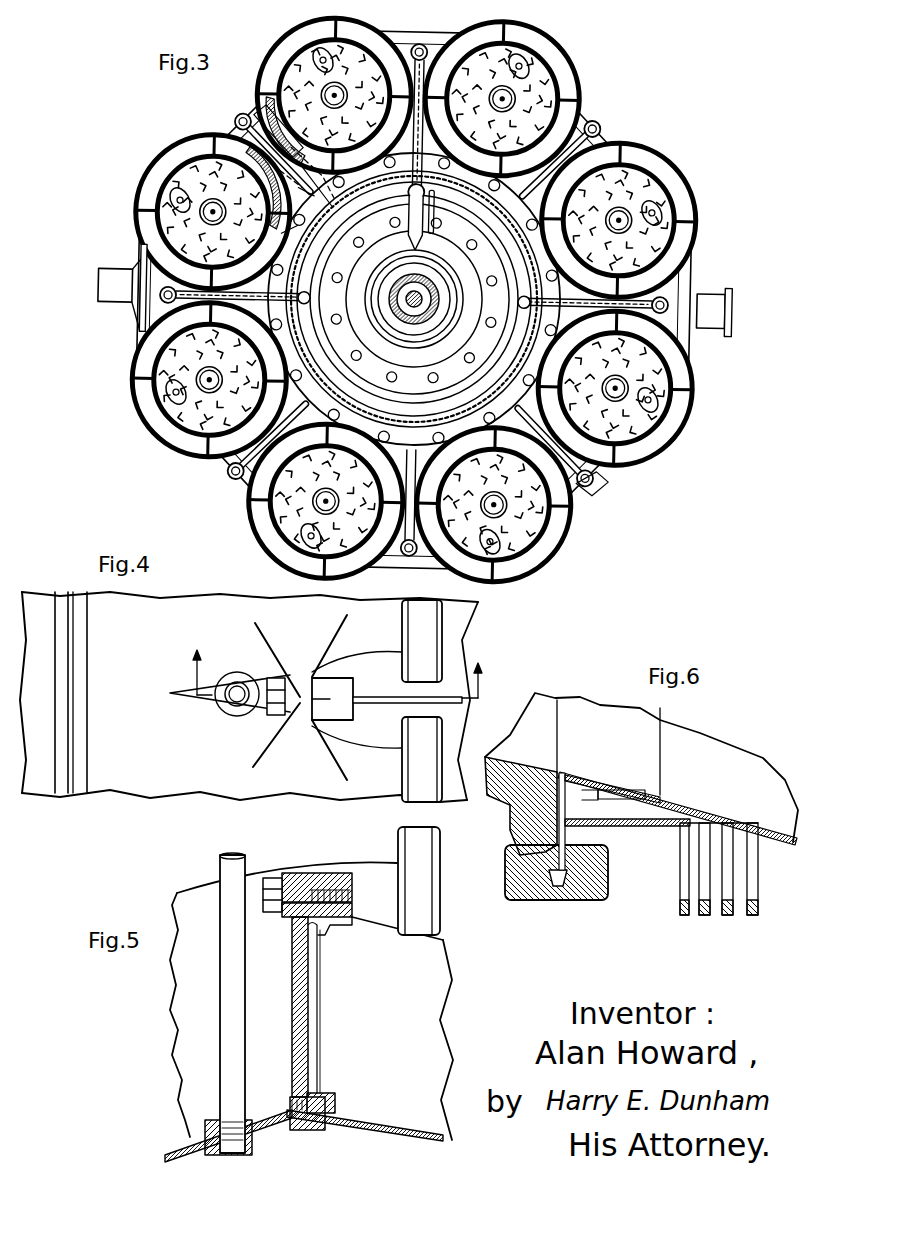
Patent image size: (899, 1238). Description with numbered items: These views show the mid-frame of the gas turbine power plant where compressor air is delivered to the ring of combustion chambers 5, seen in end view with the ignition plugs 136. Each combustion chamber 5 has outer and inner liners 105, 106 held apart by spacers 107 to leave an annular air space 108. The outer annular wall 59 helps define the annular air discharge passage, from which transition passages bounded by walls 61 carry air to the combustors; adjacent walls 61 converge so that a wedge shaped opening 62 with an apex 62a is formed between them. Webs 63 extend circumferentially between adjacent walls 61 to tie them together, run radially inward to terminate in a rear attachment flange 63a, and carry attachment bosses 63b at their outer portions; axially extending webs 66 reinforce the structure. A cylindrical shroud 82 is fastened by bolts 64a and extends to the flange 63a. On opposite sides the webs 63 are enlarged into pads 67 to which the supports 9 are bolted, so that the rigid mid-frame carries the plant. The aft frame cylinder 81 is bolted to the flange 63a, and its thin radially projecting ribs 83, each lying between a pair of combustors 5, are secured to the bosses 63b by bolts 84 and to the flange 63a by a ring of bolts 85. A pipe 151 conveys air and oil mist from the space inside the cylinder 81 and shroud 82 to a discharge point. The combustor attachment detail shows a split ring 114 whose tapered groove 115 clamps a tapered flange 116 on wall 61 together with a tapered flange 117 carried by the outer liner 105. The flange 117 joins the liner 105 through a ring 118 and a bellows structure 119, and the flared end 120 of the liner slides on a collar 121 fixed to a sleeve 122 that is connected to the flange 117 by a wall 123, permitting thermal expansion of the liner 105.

In FIG. 3, the combustion chamber 5 is at (656, 152).
In FIG. 4, the combustion chamber 5 is at (337, 667).
In FIG. 3, the central support 9 is at (110, 277).
In FIG. 4, the outer annular wall 59 is at (108, 780).
In FIG. 3, the transition passage wall 61 is at (284, 125).
In FIG. 4, the transition passage wall 61 is at (224, 780).
In FIG. 6, the transition passage wall 61 is at (500, 766).
In FIG. 4, the wedge shaped opening 62 is at (373, 728).
In FIG. 4, the apex of the wedge shaped opening 62a is at (170, 697).
In FIG. 3, the web 63 is at (258, 113).
In FIG. 4, the web 63 is at (290, 640).
In FIG. 5, the web 63 is at (296, 1003).
In FIG. 3, the rear attachment flange 63a is at (300, 194).
In FIG. 5, the rear attachment flange 63a is at (306, 1130).
In FIG. 3, the attachment boss 63b is at (236, 118).
In FIG. 4, the attachment boss 63b is at (268, 716).
In FIG. 5, the attachment boss 63b is at (296, 887).
In FIG. 3, the bolt 64a is at (292, 240).
In FIG. 3, the axially extending web 66 is at (290, 163).
In FIG. 5, the axially extending web 66 is at (180, 1000).
In FIG. 3, the pad 67 is at (152, 314).
In FIG. 3, the aft frame cylinder 81 is at (442, 378).
In FIG. 5, the aft frame cylinder 81 is at (396, 1140).
In FIG. 3, the cylindrical shroud 82 is at (307, 233).
In FIG. 5, the cylindrical shroud 82 is at (184, 1153).
In FIG. 3, the rib 83 is at (372, 380).
In FIG. 4, the rib 83 is at (386, 697).
In FIG. 5, the rib 83 is at (443, 980).
In FIG. 5, the bolt 84 is at (296, 888).
In FIG. 3, the bolt 85 is at (500, 190).
In FIG. 5, the bolt 85 is at (328, 1100).
In FIG. 3, the outer liner 105 is at (137, 213).
In FIG. 6, the outer liner 105 is at (746, 822).
In FIG. 3, the inner liner 106 is at (170, 173).
In FIG. 3, the spacer 107 is at (147, 200).
In FIG. 3, the annular air space 108 is at (170, 153).
In FIG. 6, the split ring 114 is at (562, 882).
In FIG. 6, the tapered groove 115 is at (550, 878).
In FIG. 6, the tapered flange 116 is at (545, 858).
In FIG. 6, the tapered flange 117 is at (576, 880).
In FIG. 6, the ring 118 is at (646, 827).
In FIG. 6, the bellows structure 119 is at (690, 886).
In FIG. 6, the flared end 120 is at (634, 796).
In FIG. 6, the collar 121 is at (588, 803).
In FIG. 6, the sleeve 122 is at (578, 790).
In FIG. 6, the wall 123 is at (565, 776).
In FIG. 3, the ignition plug 136 is at (660, 210).
In FIG. 5, the pipe 151 is at (228, 1030).